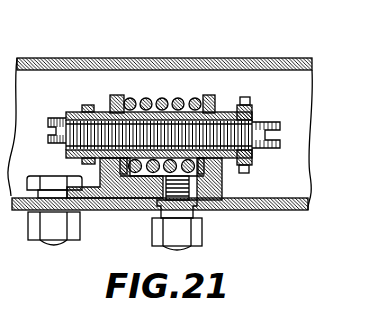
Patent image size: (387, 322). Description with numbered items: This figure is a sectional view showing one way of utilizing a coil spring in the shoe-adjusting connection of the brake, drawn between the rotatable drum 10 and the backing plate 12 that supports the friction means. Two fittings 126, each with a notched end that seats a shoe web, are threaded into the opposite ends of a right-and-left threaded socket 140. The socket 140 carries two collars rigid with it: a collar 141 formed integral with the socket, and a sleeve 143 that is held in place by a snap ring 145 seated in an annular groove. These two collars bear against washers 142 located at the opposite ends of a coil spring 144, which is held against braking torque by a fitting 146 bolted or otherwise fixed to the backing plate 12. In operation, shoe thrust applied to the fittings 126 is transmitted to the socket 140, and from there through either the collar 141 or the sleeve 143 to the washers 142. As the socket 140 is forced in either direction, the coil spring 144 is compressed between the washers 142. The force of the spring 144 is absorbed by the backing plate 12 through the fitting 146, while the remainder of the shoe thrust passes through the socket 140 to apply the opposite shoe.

The rotatable drum 10 is at (312, 63).
The backing plate 12 is at (255, 210).
The fitting 126 is at (55, 118).
The right-and-left threaded socket 140 is at (254, 114).
The collar 141 is at (217, 113).
The washers 142 is at (120, 96).
The sleeve 143 is at (100, 95).
The coil spring 144 is at (167, 97).
The snap ring 145 is at (80, 161).
The fitting 146 is at (125, 188).